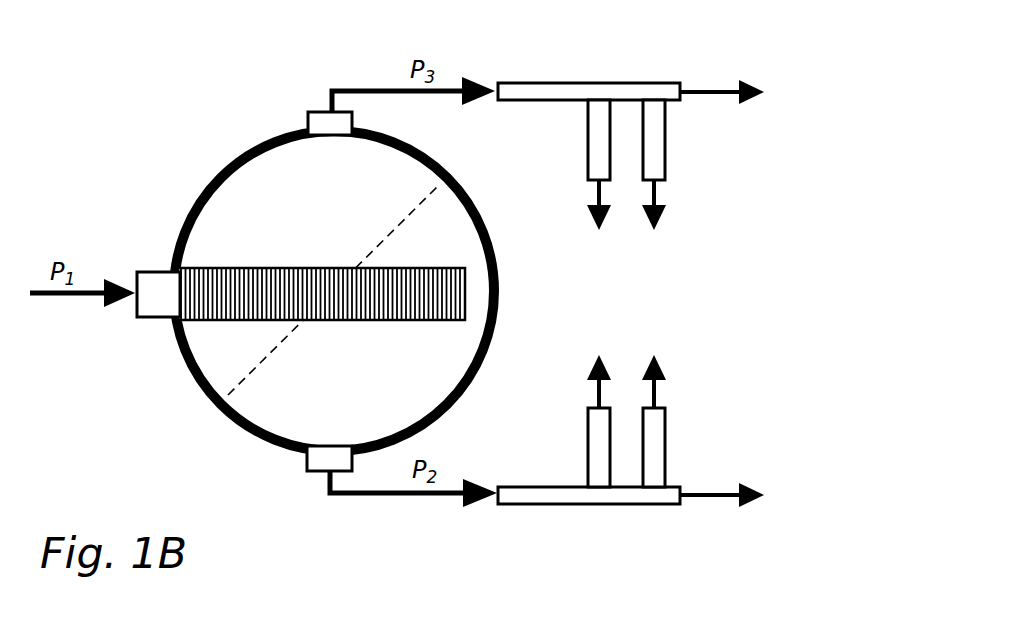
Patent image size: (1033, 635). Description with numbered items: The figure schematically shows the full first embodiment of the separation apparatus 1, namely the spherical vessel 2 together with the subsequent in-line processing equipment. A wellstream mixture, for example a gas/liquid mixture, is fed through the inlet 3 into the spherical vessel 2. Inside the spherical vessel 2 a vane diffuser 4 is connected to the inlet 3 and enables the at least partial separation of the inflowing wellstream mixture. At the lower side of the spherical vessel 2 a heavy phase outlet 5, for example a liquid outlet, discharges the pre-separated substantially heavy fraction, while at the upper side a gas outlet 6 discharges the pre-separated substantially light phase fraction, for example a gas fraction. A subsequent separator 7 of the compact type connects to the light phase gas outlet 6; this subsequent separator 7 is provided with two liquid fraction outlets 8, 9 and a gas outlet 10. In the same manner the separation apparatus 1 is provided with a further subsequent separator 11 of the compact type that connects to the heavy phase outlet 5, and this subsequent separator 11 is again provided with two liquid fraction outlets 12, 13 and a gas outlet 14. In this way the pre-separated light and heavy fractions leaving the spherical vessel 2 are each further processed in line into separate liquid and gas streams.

The separation apparatus 1 is at (130, 117).
The spherical vessel 2 is at (188, 382).
The inlet 3 is at (152, 270).
The vane diffuser 4 is at (322, 266).
The heavy phase outlet 5 is at (307, 468).
The gas outlet 6 is at (308, 118).
The subsequent separator 7 is at (602, 75).
The liquid fraction outlet 8 is at (597, 190).
The liquid fraction outlet 9 is at (656, 190).
The gas outlet 10 is at (715, 90).
The subsequent separator 11 is at (602, 509).
The liquid fraction outlet 12 is at (597, 395).
The liquid fraction outlet 13 is at (656, 395).
The gas outlet 14 is at (717, 500).